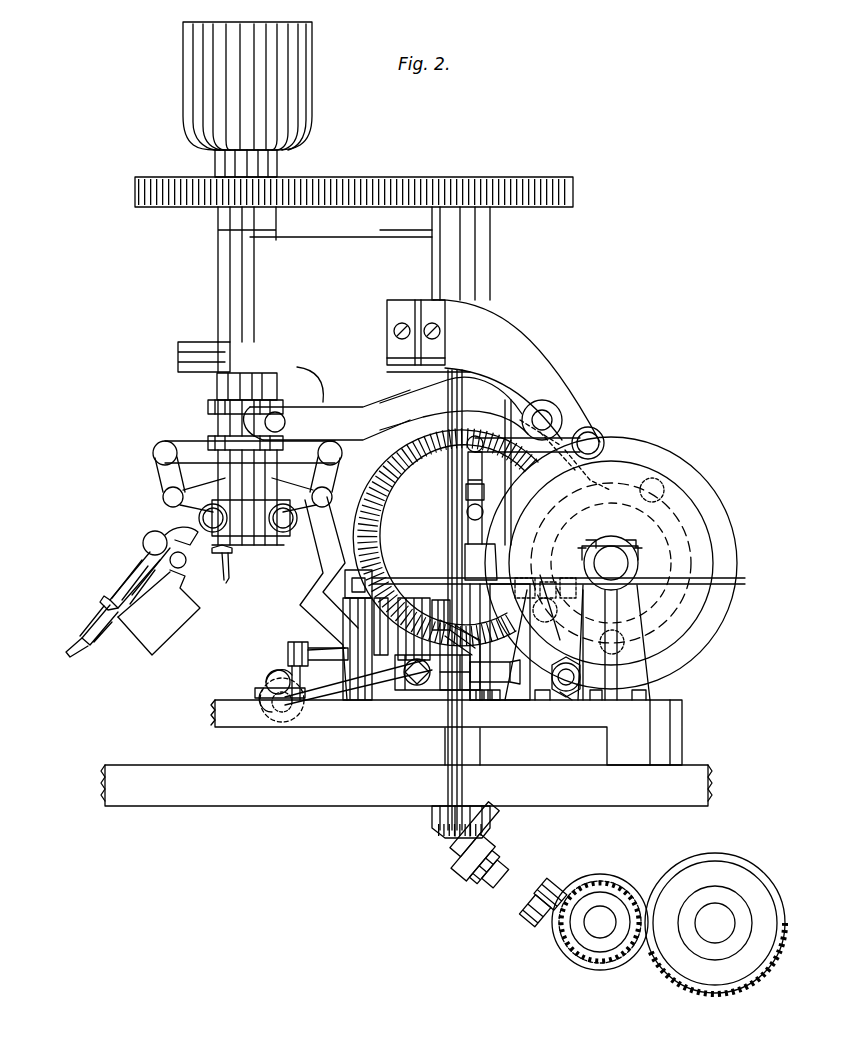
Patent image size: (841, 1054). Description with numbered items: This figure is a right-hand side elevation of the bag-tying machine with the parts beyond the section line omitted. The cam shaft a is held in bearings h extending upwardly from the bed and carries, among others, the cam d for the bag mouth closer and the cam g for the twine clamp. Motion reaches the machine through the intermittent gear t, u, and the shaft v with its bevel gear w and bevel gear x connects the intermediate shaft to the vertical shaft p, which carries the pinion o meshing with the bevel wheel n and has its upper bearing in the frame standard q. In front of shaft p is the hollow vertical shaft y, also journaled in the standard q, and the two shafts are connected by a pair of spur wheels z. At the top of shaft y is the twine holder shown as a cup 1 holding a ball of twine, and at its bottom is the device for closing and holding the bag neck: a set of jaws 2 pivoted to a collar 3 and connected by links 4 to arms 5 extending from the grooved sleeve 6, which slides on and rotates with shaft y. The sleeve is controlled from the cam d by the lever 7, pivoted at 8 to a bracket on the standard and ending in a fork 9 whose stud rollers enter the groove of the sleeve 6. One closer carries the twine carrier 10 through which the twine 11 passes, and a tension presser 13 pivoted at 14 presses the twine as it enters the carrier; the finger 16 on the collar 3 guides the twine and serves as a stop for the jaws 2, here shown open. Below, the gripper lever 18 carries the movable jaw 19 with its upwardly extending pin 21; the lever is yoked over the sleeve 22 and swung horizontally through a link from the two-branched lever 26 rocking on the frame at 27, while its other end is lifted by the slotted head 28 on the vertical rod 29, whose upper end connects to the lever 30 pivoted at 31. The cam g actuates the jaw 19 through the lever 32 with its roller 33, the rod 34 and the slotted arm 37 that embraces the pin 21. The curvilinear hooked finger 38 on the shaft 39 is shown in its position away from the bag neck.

The cup 1 is at (190, 84).
The spur wheels z is at (455, 180).
The frame standard q is at (334, 328).
The vertical shaft p is at (458, 392).
The lever 7 is at (490, 371).
The fork 9 is at (296, 412).
The grooved sleeve 6 is at (222, 418).
The arms 5 is at (190, 452).
The links 4 is at (163, 484).
The hollow vertical shaft y is at (251, 501).
The collar 3 is at (279, 534).
The finger 16 is at (224, 578).
The jaws 2 is at (238, 598).
The pivot 14 is at (148, 543).
The tension presser 13 is at (117, 586).
The twine carrier 10 is at (100, 620).
The twine 11 is at (70, 654).
The bevel wheel n is at (368, 516).
The pivot 8 is at (548, 418).
The lever 30 is at (555, 440).
The pivot 31 is at (596, 446).
The vertical rod 29 is at (470, 531).
The rod 34 is at (398, 584).
The cam d is at (735, 540).
The cam g is at (705, 576).
The shaft a is at (614, 560).
The bearings h is at (660, 656).
The roller 33 is at (543, 622).
The lever 32 is at (552, 680).
The rocking connection 27 is at (565, 692).
The two branched lever 26 is at (594, 676).
The sleeve 22 is at (410, 652).
The lever 18 is at (388, 688).
The arm 37 is at (317, 656).
The pin 21 is at (282, 676).
The shaft 39 is at (262, 690).
The movable jaw 19 is at (276, 696).
The curvilinear finger 38 is at (302, 702).
The pinion o is at (443, 746).
The slotted head 28 is at (485, 692).
The bevel gear x is at (462, 846).
The shaft v is at (525, 902).
The bevel gear w is at (570, 884).
The intermittent gear u is at (582, 956).
The intermittent gear t is at (672, 975).